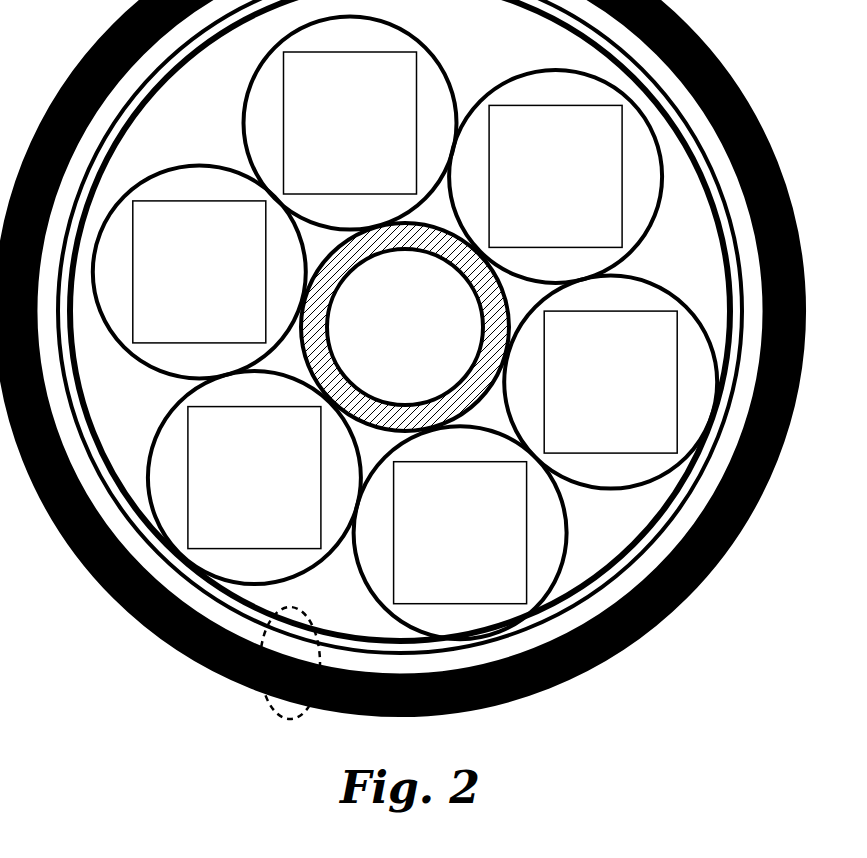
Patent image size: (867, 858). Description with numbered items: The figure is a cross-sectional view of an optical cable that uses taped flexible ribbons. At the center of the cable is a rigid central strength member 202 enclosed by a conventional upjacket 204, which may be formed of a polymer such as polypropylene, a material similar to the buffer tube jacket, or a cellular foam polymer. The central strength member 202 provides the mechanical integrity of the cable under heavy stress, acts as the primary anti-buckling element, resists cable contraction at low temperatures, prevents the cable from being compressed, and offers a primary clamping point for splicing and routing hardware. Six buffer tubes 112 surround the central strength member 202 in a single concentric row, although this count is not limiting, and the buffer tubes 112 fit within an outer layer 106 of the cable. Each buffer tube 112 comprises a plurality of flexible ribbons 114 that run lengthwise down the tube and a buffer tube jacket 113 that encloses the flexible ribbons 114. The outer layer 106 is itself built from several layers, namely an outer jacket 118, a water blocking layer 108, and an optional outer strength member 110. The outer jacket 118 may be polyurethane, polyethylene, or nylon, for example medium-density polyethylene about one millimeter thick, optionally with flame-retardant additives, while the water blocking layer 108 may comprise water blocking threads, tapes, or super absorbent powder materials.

The outer layer 106 is at (288, 716).
The water blocking layer 108 is at (727, 291).
The outer strength member 110 is at (738, 213).
The buffer tube 112 is at (302, 123).
The buffer tube jacket 113 is at (247, 132).
The flexible ribbon 114 is at (360, 144).
The outer jacket 118 is at (666, 615).
The central strength member 202 is at (428, 336).
The upjacket 204 is at (390, 257).